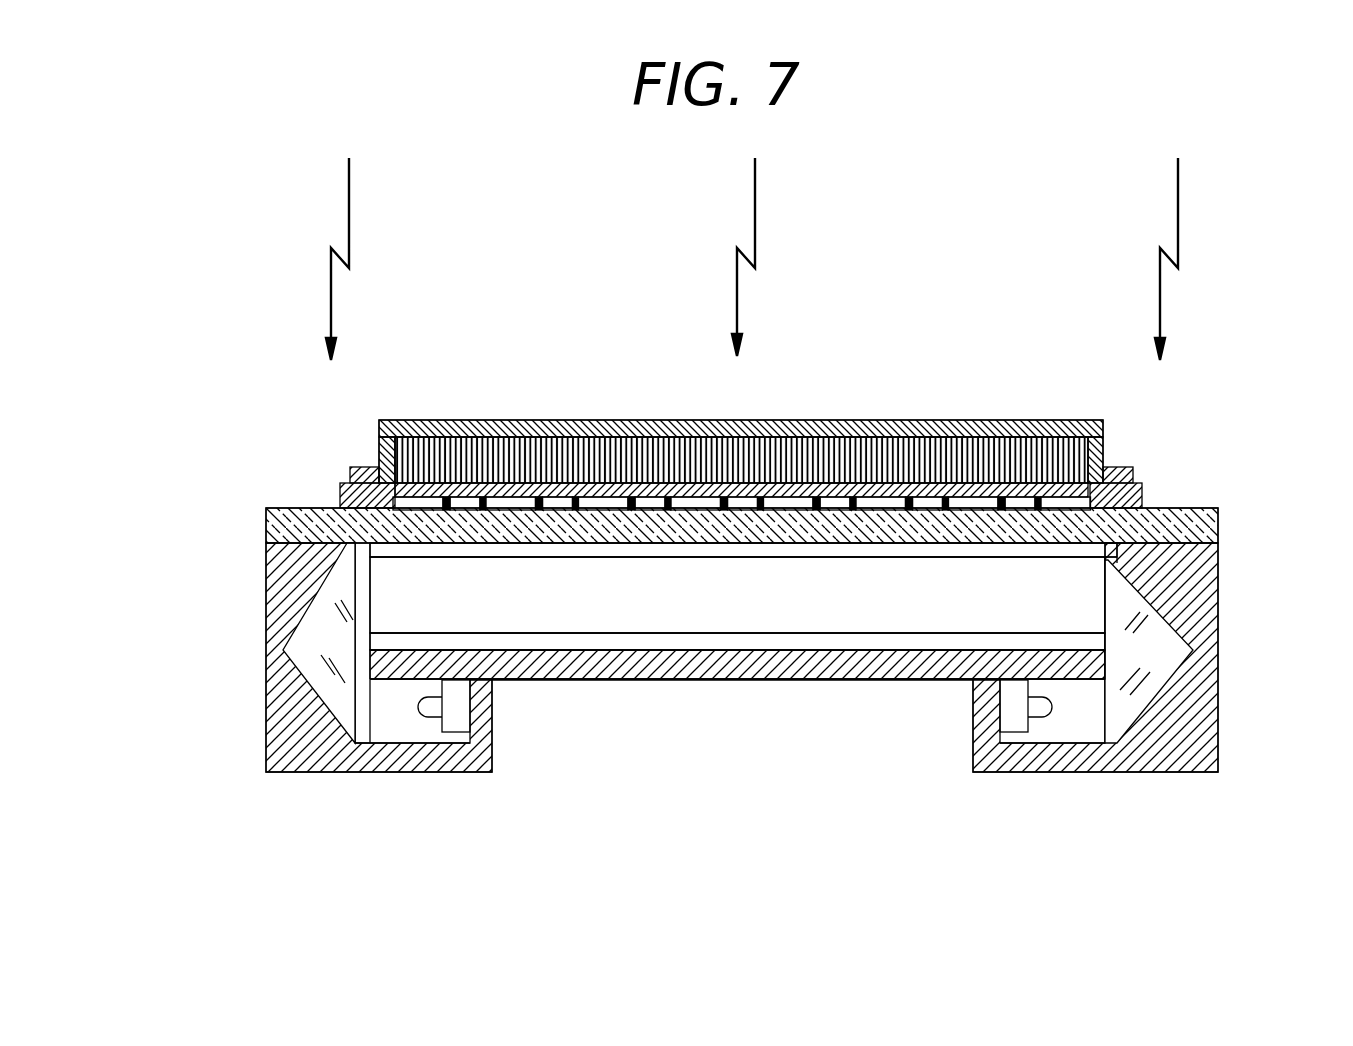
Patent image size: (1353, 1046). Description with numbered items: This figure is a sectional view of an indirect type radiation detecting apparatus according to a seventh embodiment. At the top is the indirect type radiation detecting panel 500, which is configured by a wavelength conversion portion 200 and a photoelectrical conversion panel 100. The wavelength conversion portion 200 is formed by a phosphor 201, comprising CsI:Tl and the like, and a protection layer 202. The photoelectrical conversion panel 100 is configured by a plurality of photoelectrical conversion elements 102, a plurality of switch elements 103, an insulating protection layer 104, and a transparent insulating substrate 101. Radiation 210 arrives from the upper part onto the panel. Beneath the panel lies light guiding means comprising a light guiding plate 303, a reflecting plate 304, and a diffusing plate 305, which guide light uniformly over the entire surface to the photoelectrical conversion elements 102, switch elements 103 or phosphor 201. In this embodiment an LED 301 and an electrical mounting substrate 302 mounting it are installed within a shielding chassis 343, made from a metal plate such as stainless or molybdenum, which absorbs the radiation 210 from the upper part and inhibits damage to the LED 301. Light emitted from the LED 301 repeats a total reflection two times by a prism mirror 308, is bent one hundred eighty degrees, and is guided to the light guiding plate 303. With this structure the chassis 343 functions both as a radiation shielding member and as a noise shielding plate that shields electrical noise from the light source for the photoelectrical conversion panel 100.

The indirect type radiation detecting panel 500 is at (181, 407).
The wavelength conversion portion 200 is at (245, 415).
The photoelectrical conversion panel 100 is at (245, 482).
The phosphor 201 is at (741, 417).
The protection layer 202 is at (947, 420).
The switch elements 103 is at (1018, 500).
The photoelectrical conversion elements 102 is at (1072, 505).
The transparent insulating substrate 101 is at (1218, 513).
The insulating protection layer 104 is at (340, 493).
The radiation 210 is at (757, 210).
The prism mirror 308 is at (305, 638).
The diffusing plate 305 is at (575, 550).
The light guiding plate 303 is at (688, 620).
The reflecting plate 304 is at (900, 640).
The shielding chassis 343 is at (800, 673).
The LED 301 is at (422, 712).
The electrical mounting substrate 302 is at (455, 722).